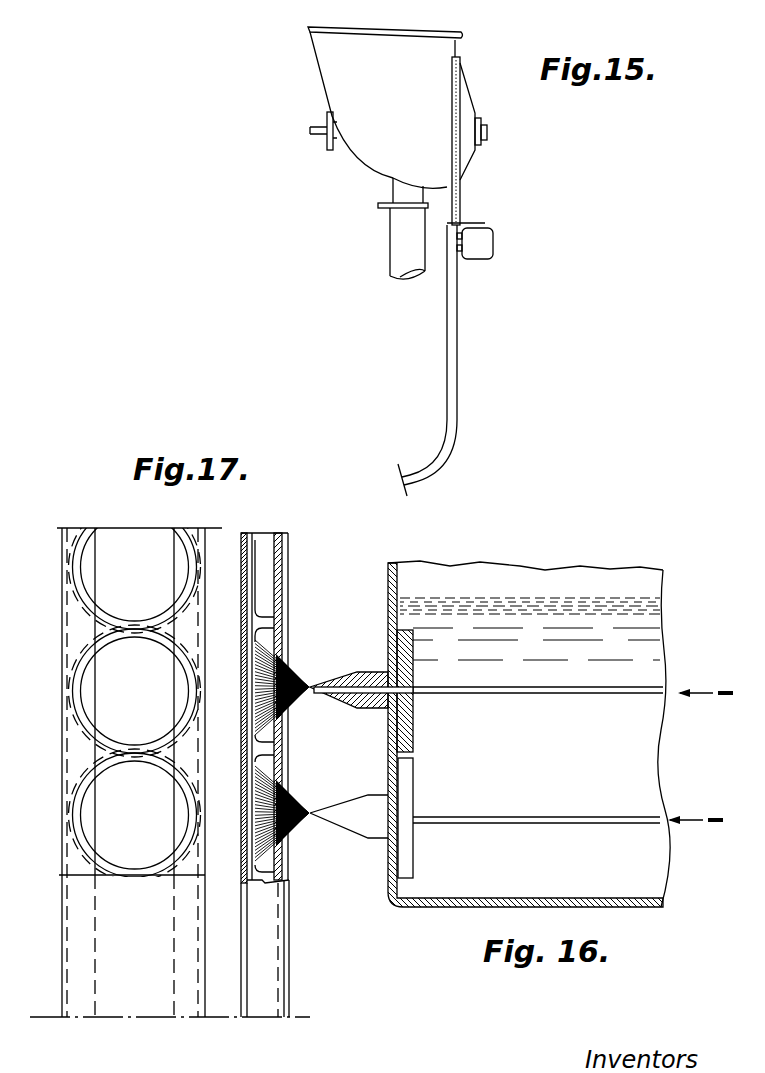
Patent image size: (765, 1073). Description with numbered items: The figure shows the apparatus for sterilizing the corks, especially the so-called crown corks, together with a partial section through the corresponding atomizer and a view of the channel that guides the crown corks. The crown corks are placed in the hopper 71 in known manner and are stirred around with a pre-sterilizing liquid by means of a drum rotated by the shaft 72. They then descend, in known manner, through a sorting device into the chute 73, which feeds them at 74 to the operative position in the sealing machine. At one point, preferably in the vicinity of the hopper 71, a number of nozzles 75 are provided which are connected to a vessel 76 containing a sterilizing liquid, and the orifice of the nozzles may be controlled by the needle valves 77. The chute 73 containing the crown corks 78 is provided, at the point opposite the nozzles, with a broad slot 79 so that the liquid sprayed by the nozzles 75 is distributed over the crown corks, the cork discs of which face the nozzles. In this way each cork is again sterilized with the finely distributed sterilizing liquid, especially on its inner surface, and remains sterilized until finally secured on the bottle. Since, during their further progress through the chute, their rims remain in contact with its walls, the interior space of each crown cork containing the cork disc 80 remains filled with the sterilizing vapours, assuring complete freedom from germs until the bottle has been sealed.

In FIG. 15, the hopper 71 is at (330, 62).
In FIG. 15, the shaft 72 is at (321, 135).
In FIG. 15, the chute 73 is at (455, 197).
In FIG. 17, the chute 73 is at (289, 585).
In FIG. 15, the operative position feed point 74 is at (420, 479).
In FIG. 16, the nozzles 75 is at (334, 683).
In FIG. 15, the vessel 76 is at (494, 252).
In FIG. 16, the vessel 76 is at (423, 568).
In FIG. 16, the needle valves 77 is at (663, 688).
In FIG. 17, the crown corks 78 is at (256, 620).
In FIG. 17, the broad slot 79 is at (143, 540).
In FIG. 17, the cork disc 80 is at (252, 716).